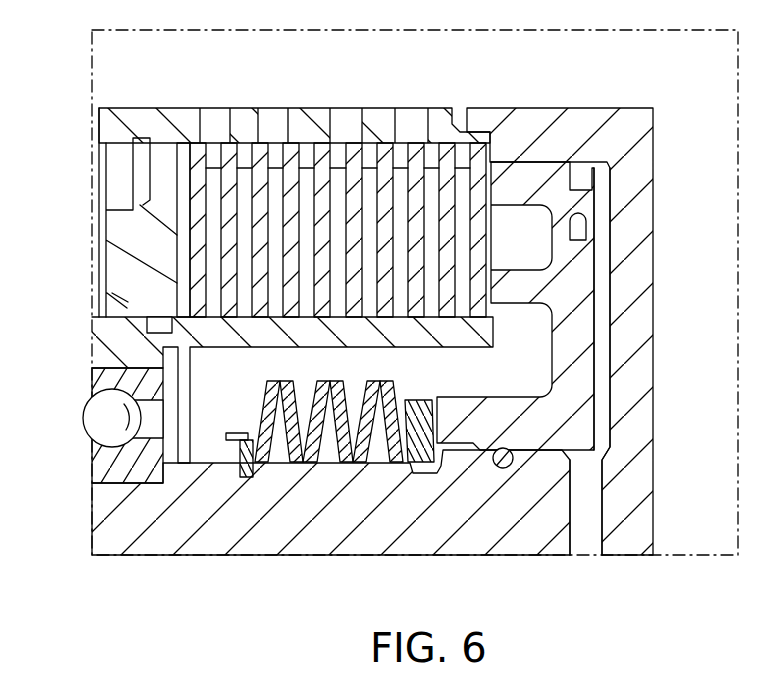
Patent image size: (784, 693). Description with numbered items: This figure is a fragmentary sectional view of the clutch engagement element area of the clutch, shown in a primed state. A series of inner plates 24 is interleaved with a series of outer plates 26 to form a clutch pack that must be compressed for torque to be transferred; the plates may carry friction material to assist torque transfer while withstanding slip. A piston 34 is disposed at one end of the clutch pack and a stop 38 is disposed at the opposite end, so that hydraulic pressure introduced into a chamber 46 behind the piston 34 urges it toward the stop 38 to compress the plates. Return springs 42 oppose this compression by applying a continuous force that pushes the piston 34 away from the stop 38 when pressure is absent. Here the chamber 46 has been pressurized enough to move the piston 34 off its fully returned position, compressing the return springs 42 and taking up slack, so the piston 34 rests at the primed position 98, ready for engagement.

The inner plates 24 is at (190, 287).
The outer plates 26 is at (289, 143).
The piston 34 is at (543, 190).
The stop 38 is at (147, 247).
The return springs 42 is at (330, 443).
The chamber 46 is at (603, 263).
The primed position 98 is at (563, 403).